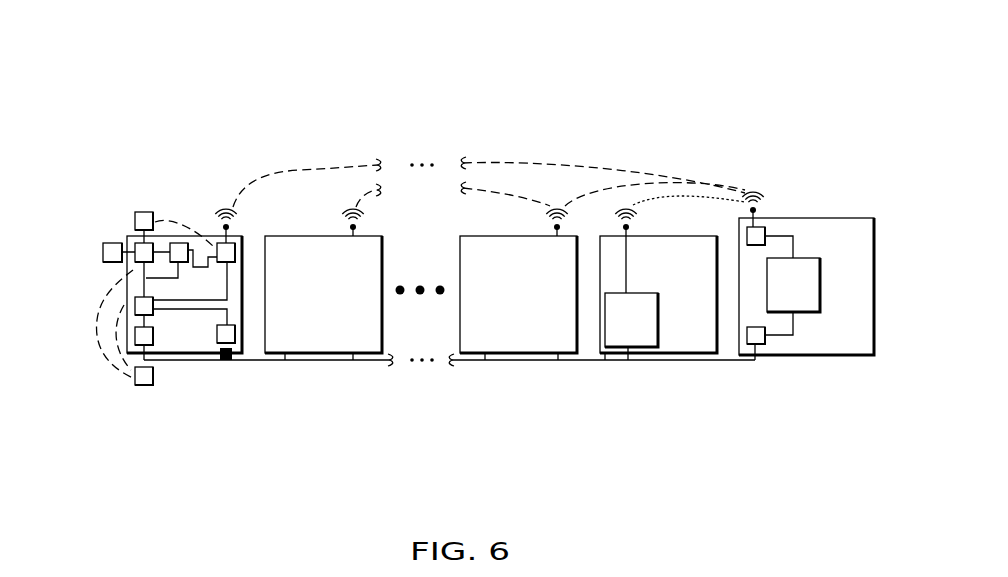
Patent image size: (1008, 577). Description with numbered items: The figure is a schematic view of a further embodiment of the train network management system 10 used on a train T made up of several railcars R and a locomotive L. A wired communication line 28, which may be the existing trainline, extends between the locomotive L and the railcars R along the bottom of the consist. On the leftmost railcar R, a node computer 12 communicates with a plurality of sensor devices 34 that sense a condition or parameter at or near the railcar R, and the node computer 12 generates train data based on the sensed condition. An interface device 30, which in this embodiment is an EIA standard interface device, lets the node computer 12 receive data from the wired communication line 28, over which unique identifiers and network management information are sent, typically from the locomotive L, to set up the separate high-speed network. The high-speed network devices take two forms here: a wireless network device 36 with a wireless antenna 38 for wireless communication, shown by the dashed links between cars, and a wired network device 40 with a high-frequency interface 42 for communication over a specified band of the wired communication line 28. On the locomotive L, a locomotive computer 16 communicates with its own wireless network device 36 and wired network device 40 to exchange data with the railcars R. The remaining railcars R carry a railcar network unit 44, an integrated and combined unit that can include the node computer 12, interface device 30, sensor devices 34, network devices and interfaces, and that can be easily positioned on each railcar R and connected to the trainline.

The train network management system 10 is at (530, 140).
The node computer 12 is at (134, 299).
The locomotive computer 16 is at (793, 285).
The wired communication line 28 is at (340, 359).
The interface device 30 is at (158, 346).
The sensor device 34 is at (62, 375).
The wireless network device 36 is at (810, 190).
The wireless antenna 38 is at (222, 242).
The wired network device 40 is at (765, 344).
The high-frequency interface 42 is at (232, 358).
The railcar network unit 44 is at (643, 362).
The railcar R is at (110, 217).
The train T is at (710, 147).
The locomotive L is at (815, 365).